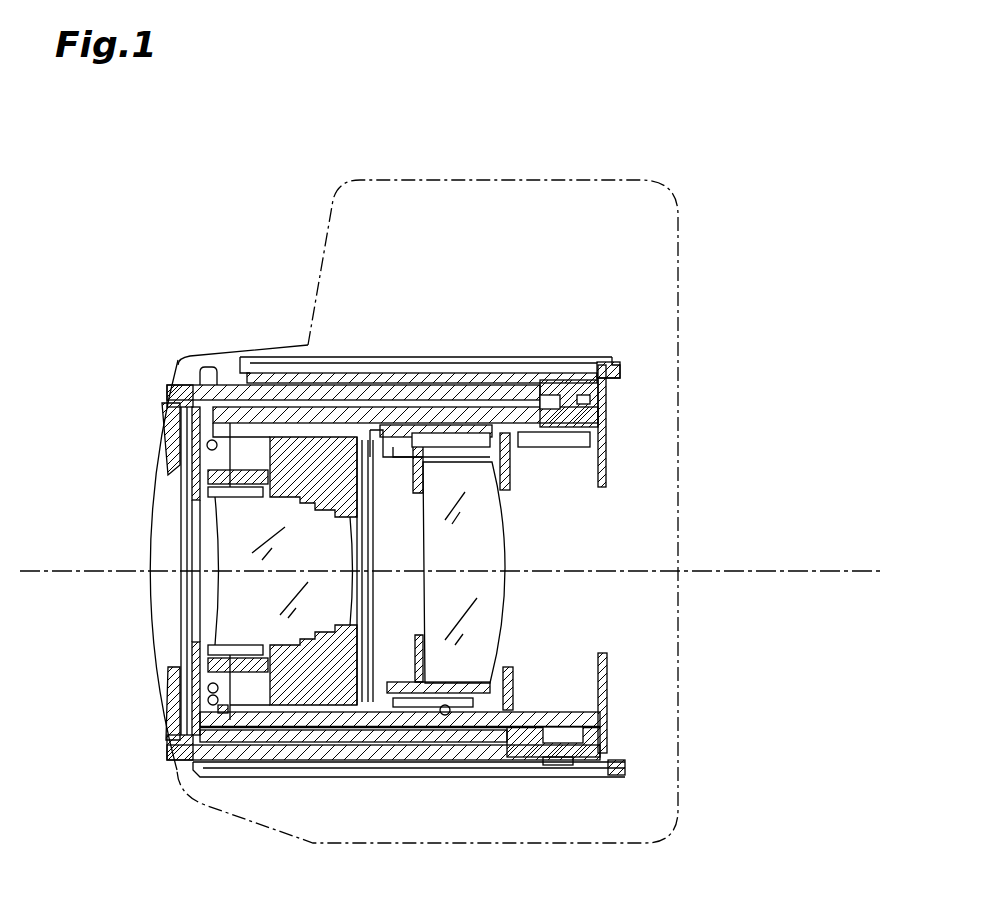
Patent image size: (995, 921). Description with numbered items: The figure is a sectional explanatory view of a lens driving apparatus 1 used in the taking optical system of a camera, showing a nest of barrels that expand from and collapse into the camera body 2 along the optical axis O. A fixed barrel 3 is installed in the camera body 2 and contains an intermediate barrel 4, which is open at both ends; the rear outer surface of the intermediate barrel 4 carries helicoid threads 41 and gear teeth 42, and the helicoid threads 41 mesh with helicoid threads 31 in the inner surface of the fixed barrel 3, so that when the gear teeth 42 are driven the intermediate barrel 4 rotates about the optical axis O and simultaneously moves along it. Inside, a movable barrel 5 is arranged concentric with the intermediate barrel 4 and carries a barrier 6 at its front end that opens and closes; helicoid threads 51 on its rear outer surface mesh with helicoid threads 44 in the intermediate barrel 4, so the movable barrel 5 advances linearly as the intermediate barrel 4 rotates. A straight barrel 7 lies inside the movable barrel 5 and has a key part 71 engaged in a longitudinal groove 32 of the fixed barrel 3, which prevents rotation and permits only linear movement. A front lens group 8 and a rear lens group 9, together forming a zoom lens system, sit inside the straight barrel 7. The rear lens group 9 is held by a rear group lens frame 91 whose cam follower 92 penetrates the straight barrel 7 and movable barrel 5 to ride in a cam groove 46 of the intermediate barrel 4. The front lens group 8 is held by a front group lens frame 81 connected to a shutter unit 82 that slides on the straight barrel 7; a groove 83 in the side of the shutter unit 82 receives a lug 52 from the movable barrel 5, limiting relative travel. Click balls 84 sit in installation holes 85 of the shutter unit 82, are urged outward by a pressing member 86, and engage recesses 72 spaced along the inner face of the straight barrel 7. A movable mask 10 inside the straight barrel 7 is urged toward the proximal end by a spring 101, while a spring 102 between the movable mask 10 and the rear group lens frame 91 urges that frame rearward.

The lens driving apparatus 1 is at (136, 278).
The camera body 2 is at (678, 242).
The fixed barrel 3 is at (488, 372).
The intermediate barrel 4 is at (281, 385).
The movable barrel 5 is at (240, 372).
The barrier 6 is at (180, 488).
The straight barrel 7 is at (553, 420).
The front lens group 8 is at (220, 618).
The rear lens group 9 is at (497, 593).
The movable mask 10 is at (508, 477).
The helicoid threads 31 is at (400, 374).
The longitudinal groove 32 is at (508, 366).
The helicoid threads 41 is at (560, 370).
The gear teeth 42 is at (585, 362).
The helicoid threads 44 is at (378, 728).
The cam groove 46 is at (490, 395).
The helicoid threads 51 is at (430, 385).
The lug 52 is at (343, 753).
The key part 71 is at (598, 408).
The recesses 72 is at (235, 728).
The front group lens frame 81 is at (228, 505).
The shutter unit 82 is at (347, 432).
The groove 83 is at (300, 727).
The click balls 84 is at (463, 728).
The installation hole 85 is at (444, 722).
The pressing member 86 is at (375, 668).
The rear group lens frame 91 is at (455, 450).
The cam follower 92 is at (468, 405).
The spring 101 is at (577, 443).
The spring 102 is at (408, 467).
The optical axis O is at (43, 568).